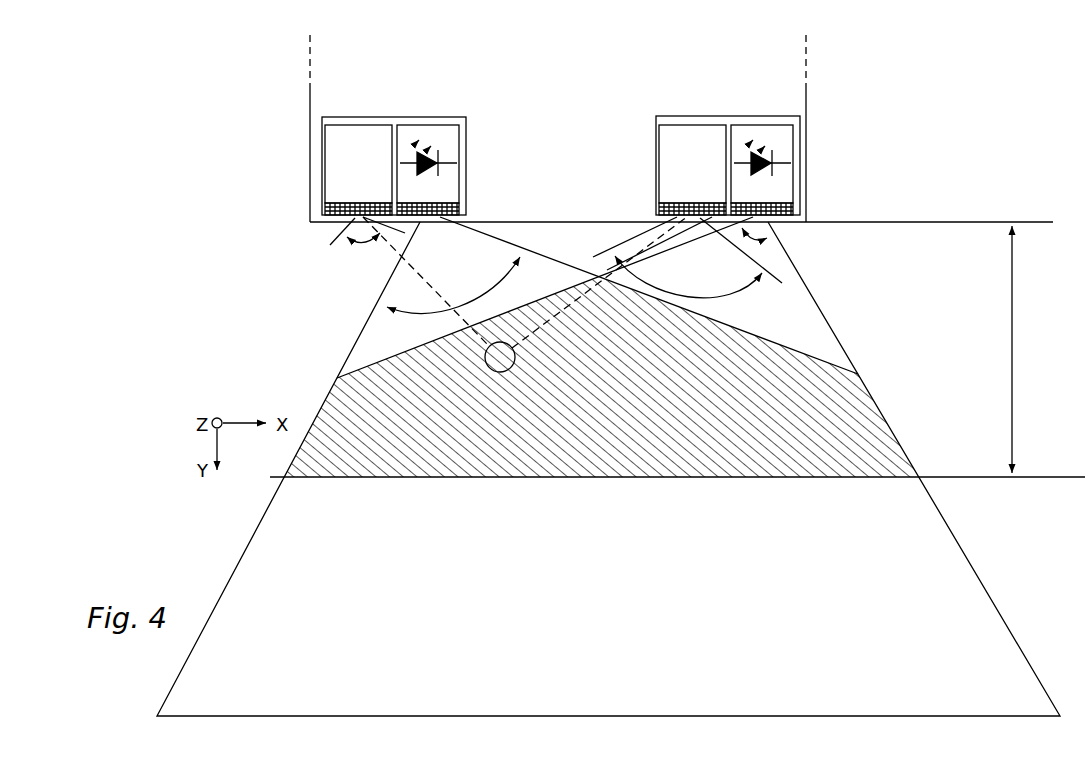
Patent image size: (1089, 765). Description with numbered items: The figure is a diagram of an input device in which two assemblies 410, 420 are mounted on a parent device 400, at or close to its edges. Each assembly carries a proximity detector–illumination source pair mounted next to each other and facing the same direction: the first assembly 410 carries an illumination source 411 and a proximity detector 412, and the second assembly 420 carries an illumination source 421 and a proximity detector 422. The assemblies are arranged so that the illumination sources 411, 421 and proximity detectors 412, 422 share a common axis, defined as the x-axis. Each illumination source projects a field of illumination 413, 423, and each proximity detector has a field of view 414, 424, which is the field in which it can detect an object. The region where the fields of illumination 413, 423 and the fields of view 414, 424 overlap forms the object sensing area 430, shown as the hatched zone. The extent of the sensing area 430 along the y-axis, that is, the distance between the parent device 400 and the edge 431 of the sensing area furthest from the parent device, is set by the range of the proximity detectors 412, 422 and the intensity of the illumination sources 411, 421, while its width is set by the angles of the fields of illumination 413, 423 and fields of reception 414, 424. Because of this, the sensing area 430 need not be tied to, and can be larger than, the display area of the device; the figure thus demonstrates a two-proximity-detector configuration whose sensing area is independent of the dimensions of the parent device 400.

The parent device 400 is at (589, 54).
The first assembly 410 is at (389, 122).
The illumination source 411 is at (464, 203).
The proximity detector 412 is at (325, 208).
The field of illumination 413 is at (403, 310).
The field of view 414 is at (347, 231).
The second assembly 420 is at (731, 134).
The illumination source 421 is at (798, 206).
The proximity detector 422 is at (657, 203).
The field of illumination 423 is at (786, 285).
The field of view 424 is at (718, 298).
The object sensing area 430 is at (885, 413).
The edge of object sensing area 431 is at (608, 715).